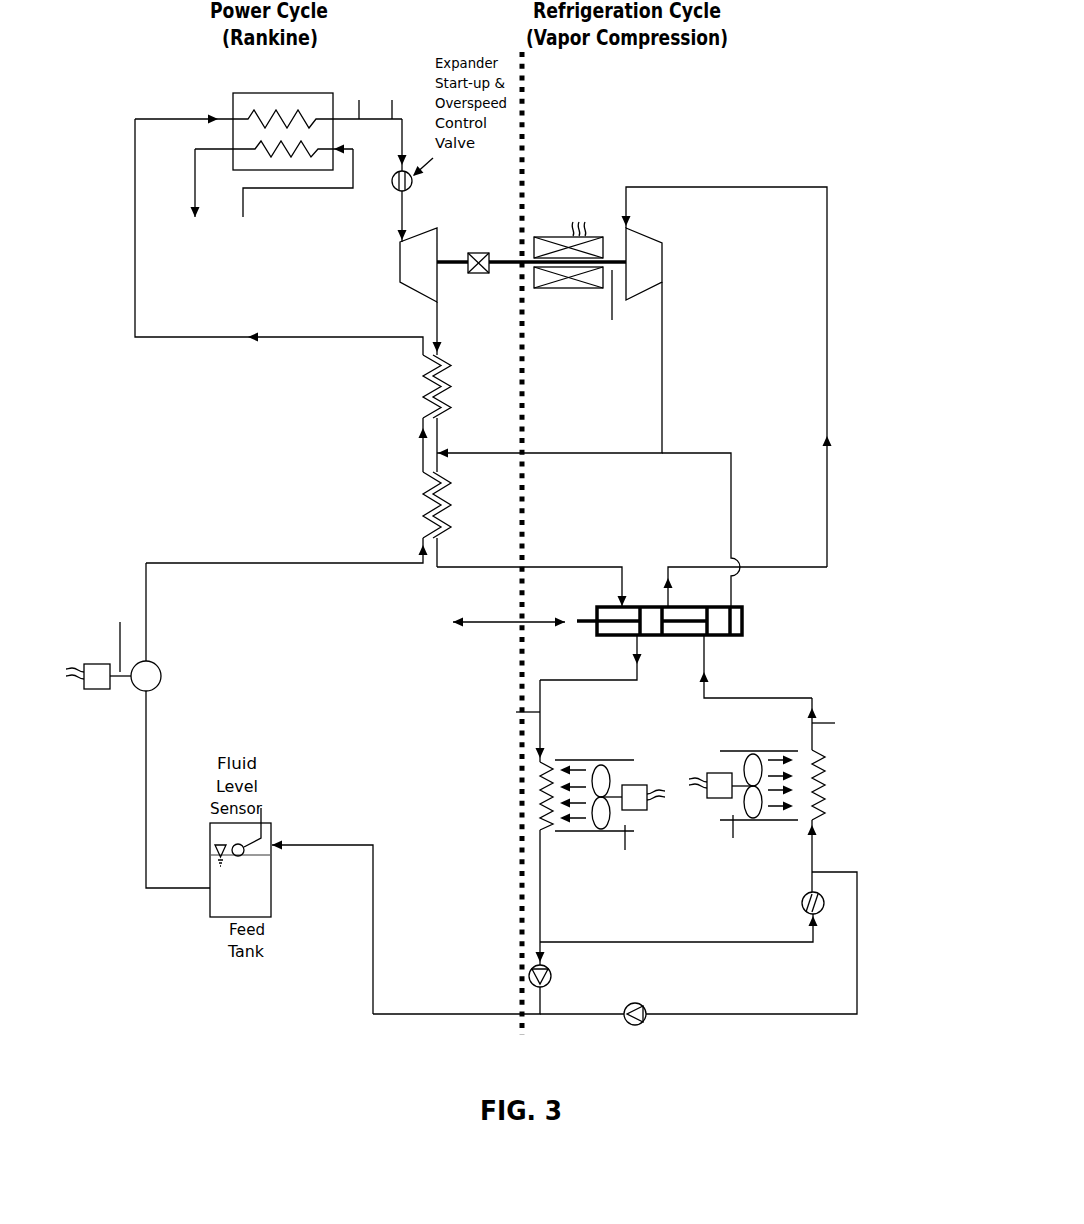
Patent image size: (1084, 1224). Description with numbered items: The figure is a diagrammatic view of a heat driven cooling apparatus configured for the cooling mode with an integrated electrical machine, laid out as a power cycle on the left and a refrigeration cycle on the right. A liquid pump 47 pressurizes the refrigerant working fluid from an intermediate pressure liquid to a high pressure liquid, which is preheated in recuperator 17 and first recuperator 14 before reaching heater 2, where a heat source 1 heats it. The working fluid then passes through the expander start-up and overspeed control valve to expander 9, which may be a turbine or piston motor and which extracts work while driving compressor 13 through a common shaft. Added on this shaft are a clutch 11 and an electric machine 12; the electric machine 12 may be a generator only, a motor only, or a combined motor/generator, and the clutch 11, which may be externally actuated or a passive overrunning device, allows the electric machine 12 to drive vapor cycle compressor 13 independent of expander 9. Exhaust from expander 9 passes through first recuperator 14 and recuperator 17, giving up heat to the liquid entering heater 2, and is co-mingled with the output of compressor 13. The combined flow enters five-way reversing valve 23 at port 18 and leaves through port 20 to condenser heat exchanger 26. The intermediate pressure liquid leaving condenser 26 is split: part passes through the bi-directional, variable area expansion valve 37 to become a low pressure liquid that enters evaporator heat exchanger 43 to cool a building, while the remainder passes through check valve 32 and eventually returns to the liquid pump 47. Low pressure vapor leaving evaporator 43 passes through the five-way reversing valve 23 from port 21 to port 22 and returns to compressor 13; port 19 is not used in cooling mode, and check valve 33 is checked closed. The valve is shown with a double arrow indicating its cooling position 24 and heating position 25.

The heat source 1 is at (266, 202).
The heater 2 is at (268, 120).
The expander 9 is at (372, 291).
The clutch 11 is at (482, 293).
The electric machine 12 is at (592, 220).
The compressor 13 is at (634, 377).
The first recuperator 14 is at (374, 413).
The recuperator 17 is at (298, 519).
The port 18 is at (532, 576).
The port 19 is at (712, 530).
The port 20 is at (603, 657).
The port 21 is at (756, 666).
The port 22 is at (746, 578).
The five-way reversing valve 23 is at (738, 621).
The cooling mode position 24 is at (567, 607).
The heating mode position 25 is at (473, 607).
The condenser heat exchanger 26 is at (529, 822).
The check valve 32 is at (462, 983).
The check valve 33 is at (607, 994).
The bi-directional, variable area expansion valve 37 is at (698, 943).
The evaporator heat exchanger 43 is at (815, 795).
The liquid pump 47 is at (155, 725).